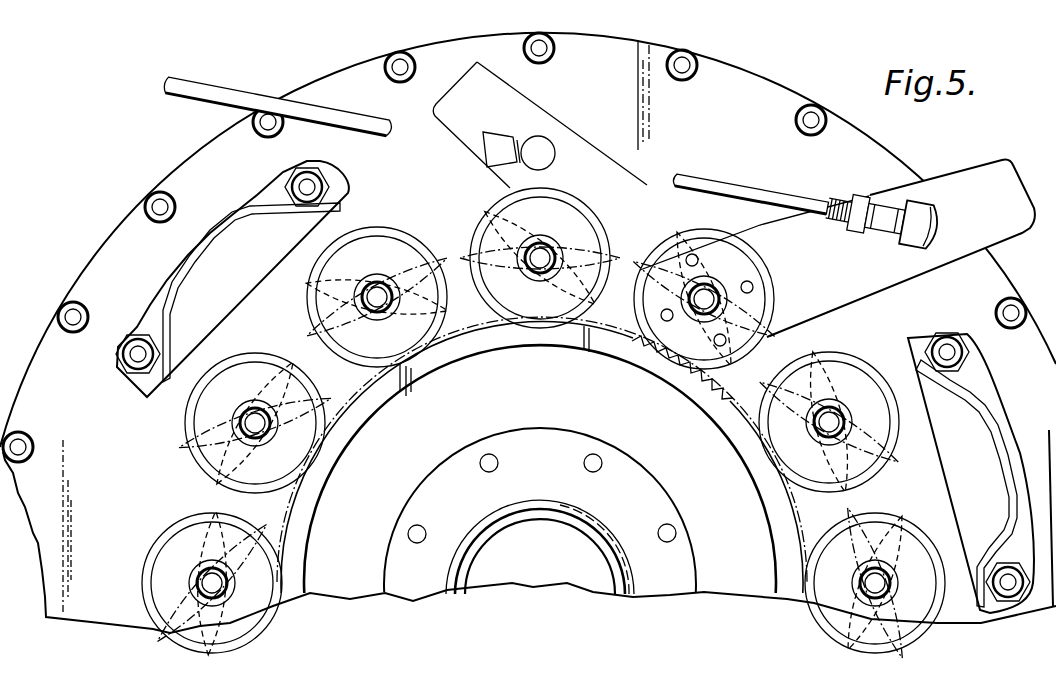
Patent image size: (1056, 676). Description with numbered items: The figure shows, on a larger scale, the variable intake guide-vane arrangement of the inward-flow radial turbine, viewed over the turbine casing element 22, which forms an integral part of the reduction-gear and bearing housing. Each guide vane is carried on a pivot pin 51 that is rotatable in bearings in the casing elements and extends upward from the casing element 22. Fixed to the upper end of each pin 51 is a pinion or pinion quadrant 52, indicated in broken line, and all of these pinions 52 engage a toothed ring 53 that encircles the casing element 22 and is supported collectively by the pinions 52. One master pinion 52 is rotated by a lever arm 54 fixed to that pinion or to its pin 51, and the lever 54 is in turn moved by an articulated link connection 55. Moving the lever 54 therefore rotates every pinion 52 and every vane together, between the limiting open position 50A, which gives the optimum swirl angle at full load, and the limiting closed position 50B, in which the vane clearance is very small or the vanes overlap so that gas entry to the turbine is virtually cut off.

The turbine casing element 22 is at (892, 172).
The open vane position 50A is at (478, 214).
The closed vane position 50B is at (463, 252).
The pivot pin 51 is at (373, 290).
The pinion 52 is at (300, 322).
The toothed ring 53 is at (700, 383).
The lever arm 54 is at (975, 178).
The articulated link connection 55 is at (232, 96).